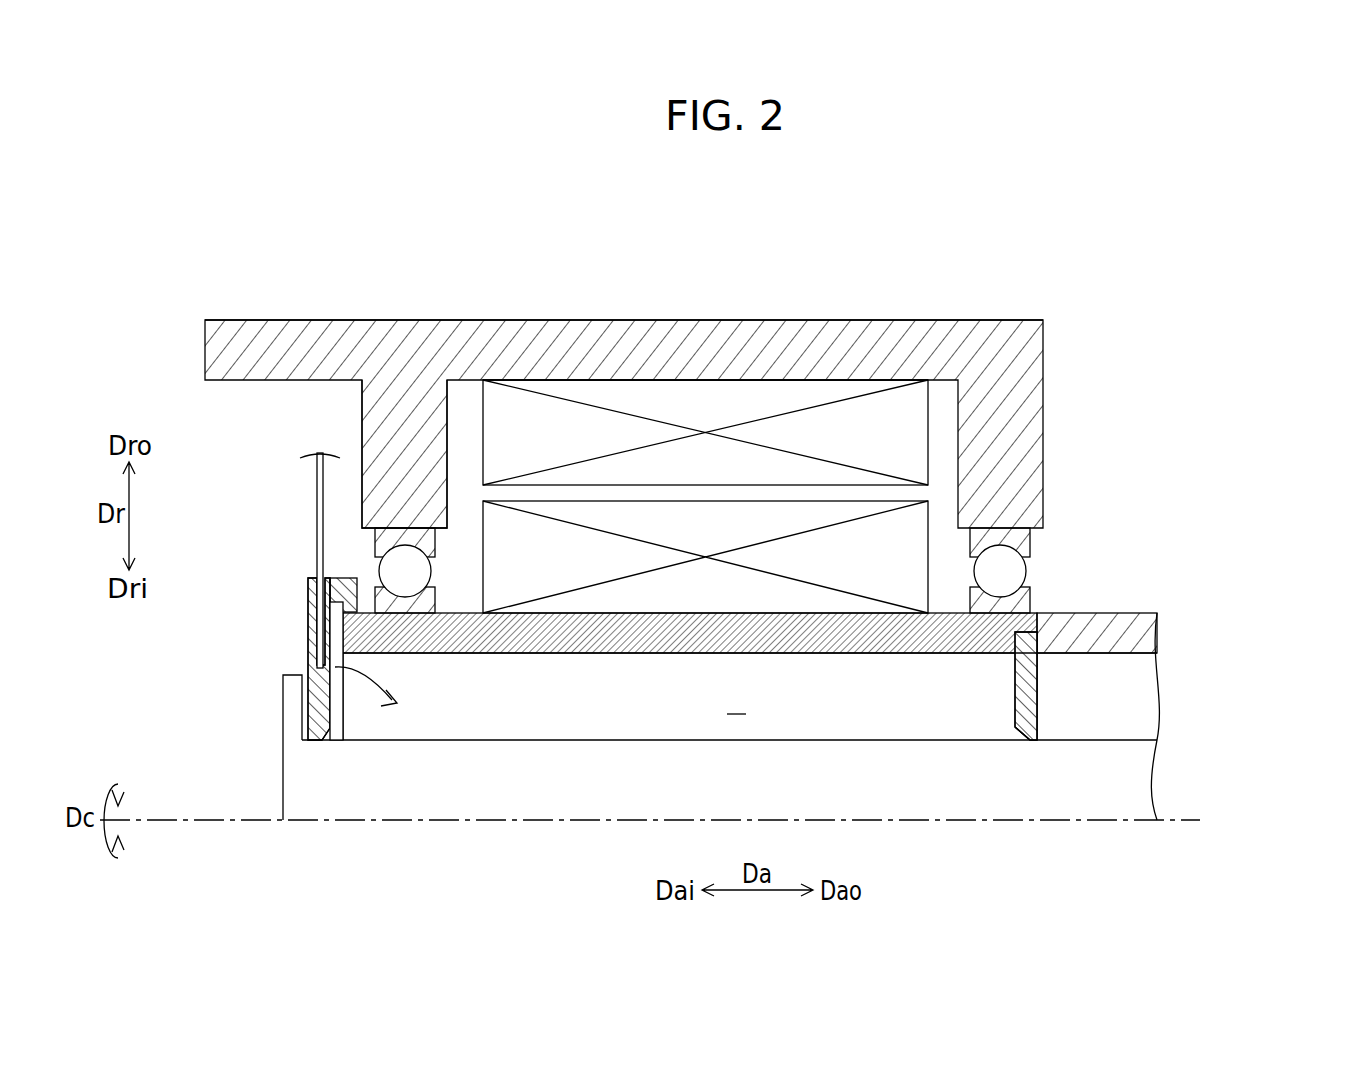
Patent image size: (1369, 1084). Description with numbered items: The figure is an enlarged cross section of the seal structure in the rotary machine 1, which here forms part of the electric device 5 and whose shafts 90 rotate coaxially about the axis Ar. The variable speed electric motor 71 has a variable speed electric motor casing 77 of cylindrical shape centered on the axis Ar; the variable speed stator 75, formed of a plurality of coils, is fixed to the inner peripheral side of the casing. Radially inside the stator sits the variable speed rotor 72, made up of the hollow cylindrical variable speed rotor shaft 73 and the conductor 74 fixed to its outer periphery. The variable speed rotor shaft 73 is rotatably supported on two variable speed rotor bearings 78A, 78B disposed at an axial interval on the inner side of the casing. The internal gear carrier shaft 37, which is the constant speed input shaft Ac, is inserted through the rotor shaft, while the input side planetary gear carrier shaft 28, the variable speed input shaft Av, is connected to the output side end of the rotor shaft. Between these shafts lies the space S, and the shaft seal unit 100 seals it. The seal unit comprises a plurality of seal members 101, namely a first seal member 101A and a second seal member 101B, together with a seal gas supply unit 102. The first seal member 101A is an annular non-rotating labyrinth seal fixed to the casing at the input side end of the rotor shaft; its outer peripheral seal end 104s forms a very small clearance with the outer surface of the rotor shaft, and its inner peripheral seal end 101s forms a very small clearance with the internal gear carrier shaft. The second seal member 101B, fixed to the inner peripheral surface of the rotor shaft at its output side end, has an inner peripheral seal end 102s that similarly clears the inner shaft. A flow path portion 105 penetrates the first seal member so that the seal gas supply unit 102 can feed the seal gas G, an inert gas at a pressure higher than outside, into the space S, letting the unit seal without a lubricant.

The rotary machine 1 is at (922, 288).
The electric device 5 is at (624, 364).
The variable speed electric motor 71 is at (619, 305).
The variable speed electric motor casing 77 is at (537, 320).
The shafts 90 is at (819, 537).
The variable speed rotor shaft 73 is at (705, 410).
The conductor 74 is at (640, 500).
The variable speed rotor 72 is at (774, 488).
The variable speed stator 75 is at (850, 387).
The variable speed rotor bearing 78A is at (403, 528).
The variable speed rotor bearing 78B is at (1000, 528).
The outer peripheral seal end 104s is at (353, 613).
The input side planetary gear carrier shaft 28 is at (1150, 610).
The variable speed input shaft Av is at (1177, 589).
The internal gear carrier shaft 37 is at (1127, 737).
The constant speed input shaft Ac is at (819, 716).
The shaft seal unit 100 is at (651, 653).
The seal members 101 is at (651, 606).
The first seal member 101A is at (308, 640).
The second seal member 101B is at (1037, 682).
The flow path portion 105 is at (310, 600).
The seal gas supply unit 102 is at (317, 497).
The inner peripheral seal end 101s is at (325, 735).
The inner peripheral seal end 102s is at (1027, 740).
The seal gas G is at (367, 690).
The space S is at (690, 684).
The axis Ar is at (1178, 820).